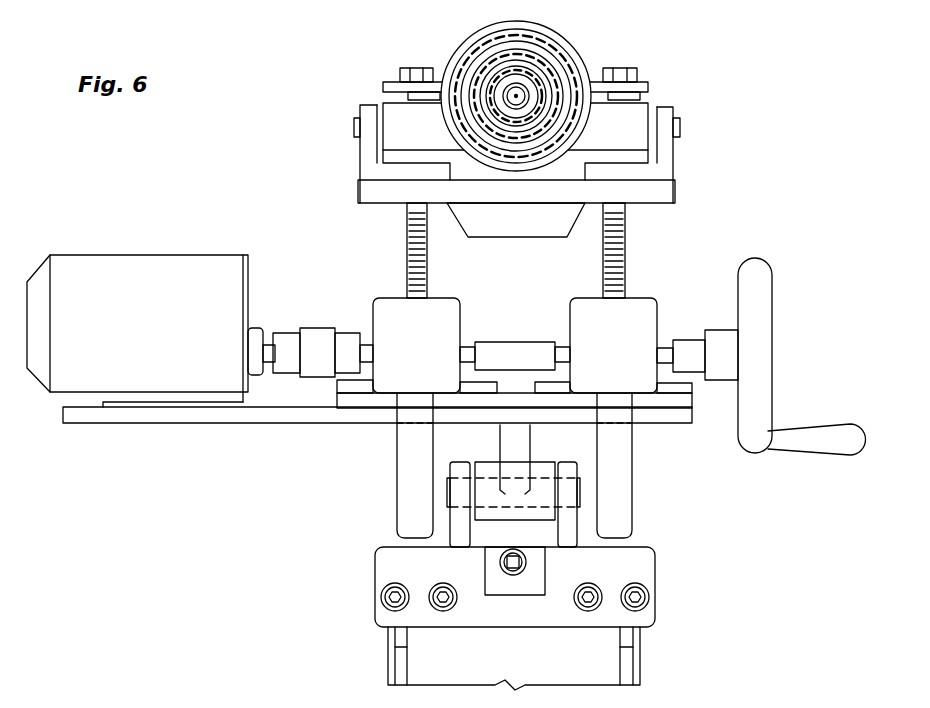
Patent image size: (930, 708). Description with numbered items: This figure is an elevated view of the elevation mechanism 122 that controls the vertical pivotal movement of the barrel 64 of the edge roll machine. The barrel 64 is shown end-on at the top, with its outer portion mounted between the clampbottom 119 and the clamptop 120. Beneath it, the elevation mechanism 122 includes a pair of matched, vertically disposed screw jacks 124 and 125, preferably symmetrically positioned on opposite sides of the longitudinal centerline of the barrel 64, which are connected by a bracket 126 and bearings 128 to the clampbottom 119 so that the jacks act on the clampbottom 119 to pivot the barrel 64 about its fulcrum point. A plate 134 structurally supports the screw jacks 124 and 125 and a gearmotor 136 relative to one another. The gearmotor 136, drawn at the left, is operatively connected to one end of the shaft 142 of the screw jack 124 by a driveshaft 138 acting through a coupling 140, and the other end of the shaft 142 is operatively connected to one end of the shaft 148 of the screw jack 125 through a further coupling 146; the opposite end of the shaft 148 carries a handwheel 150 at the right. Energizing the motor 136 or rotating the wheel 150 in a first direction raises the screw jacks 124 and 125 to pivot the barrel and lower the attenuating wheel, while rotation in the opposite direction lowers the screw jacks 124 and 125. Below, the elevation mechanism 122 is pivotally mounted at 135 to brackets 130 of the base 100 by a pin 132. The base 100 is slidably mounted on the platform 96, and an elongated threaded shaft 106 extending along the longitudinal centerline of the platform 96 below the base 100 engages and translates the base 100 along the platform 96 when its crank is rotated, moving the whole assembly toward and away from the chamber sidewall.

The barrel 64 is at (553, 50).
The platform 96 is at (638, 660).
The base 100 is at (622, 576).
The threaded shaft 106 is at (500, 562).
The clampbottom 119 is at (640, 110).
The clamptop 120 is at (385, 87).
The elevation mechanism 122 is at (272, 480).
The screw jack 124 is at (393, 303).
The screw jack 125 is at (643, 307).
The bracket 126 is at (523, 230).
The bearings 128 is at (367, 135).
The brackets 130 is at (457, 530).
The pin 132 is at (445, 493).
The plate 134 is at (268, 417).
The pivotal mounting 135 is at (458, 465).
The gearmotor 136 is at (148, 318).
The driveshaft 138 is at (272, 333).
The coupling 140 is at (313, 335).
The shaft 142 is at (368, 343).
The coupling 146 is at (513, 350).
The shaft 148 is at (567, 343).
The handwheel 150 is at (837, 433).